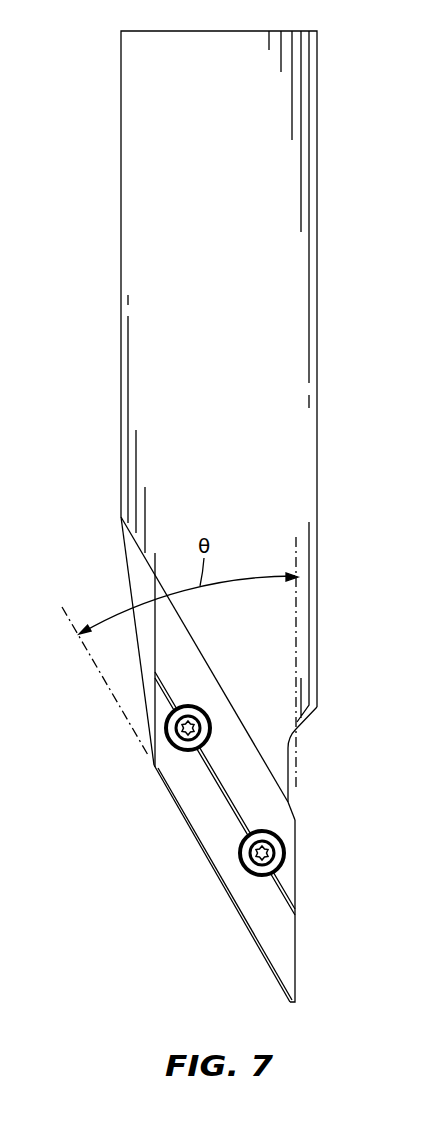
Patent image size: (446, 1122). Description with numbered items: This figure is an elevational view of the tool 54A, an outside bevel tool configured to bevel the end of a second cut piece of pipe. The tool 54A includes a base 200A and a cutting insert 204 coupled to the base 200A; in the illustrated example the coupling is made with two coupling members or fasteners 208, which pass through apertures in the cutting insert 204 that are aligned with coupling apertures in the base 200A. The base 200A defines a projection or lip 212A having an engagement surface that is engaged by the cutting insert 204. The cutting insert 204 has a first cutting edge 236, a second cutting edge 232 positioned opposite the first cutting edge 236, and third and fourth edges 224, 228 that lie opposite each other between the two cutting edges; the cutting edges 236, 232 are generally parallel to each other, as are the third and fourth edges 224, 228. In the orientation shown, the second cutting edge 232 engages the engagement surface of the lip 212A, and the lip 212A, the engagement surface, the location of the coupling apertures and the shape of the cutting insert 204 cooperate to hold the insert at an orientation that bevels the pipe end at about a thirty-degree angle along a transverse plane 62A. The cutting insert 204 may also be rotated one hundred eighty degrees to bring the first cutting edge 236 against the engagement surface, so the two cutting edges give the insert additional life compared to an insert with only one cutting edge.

The base 200A is at (272, 98).
The tool 54A is at (214, 516).
The lip 212A is at (226, 695).
The fourth edge 228 is at (152, 638).
The transverse plane 62A is at (179, 662).
The fasteners 208 is at (177, 752).
The first cutting edge 236 is at (190, 838).
The cutting insert 204 is at (215, 830).
The second cutting edge 232 is at (292, 812).
The third edge 224 is at (297, 965).